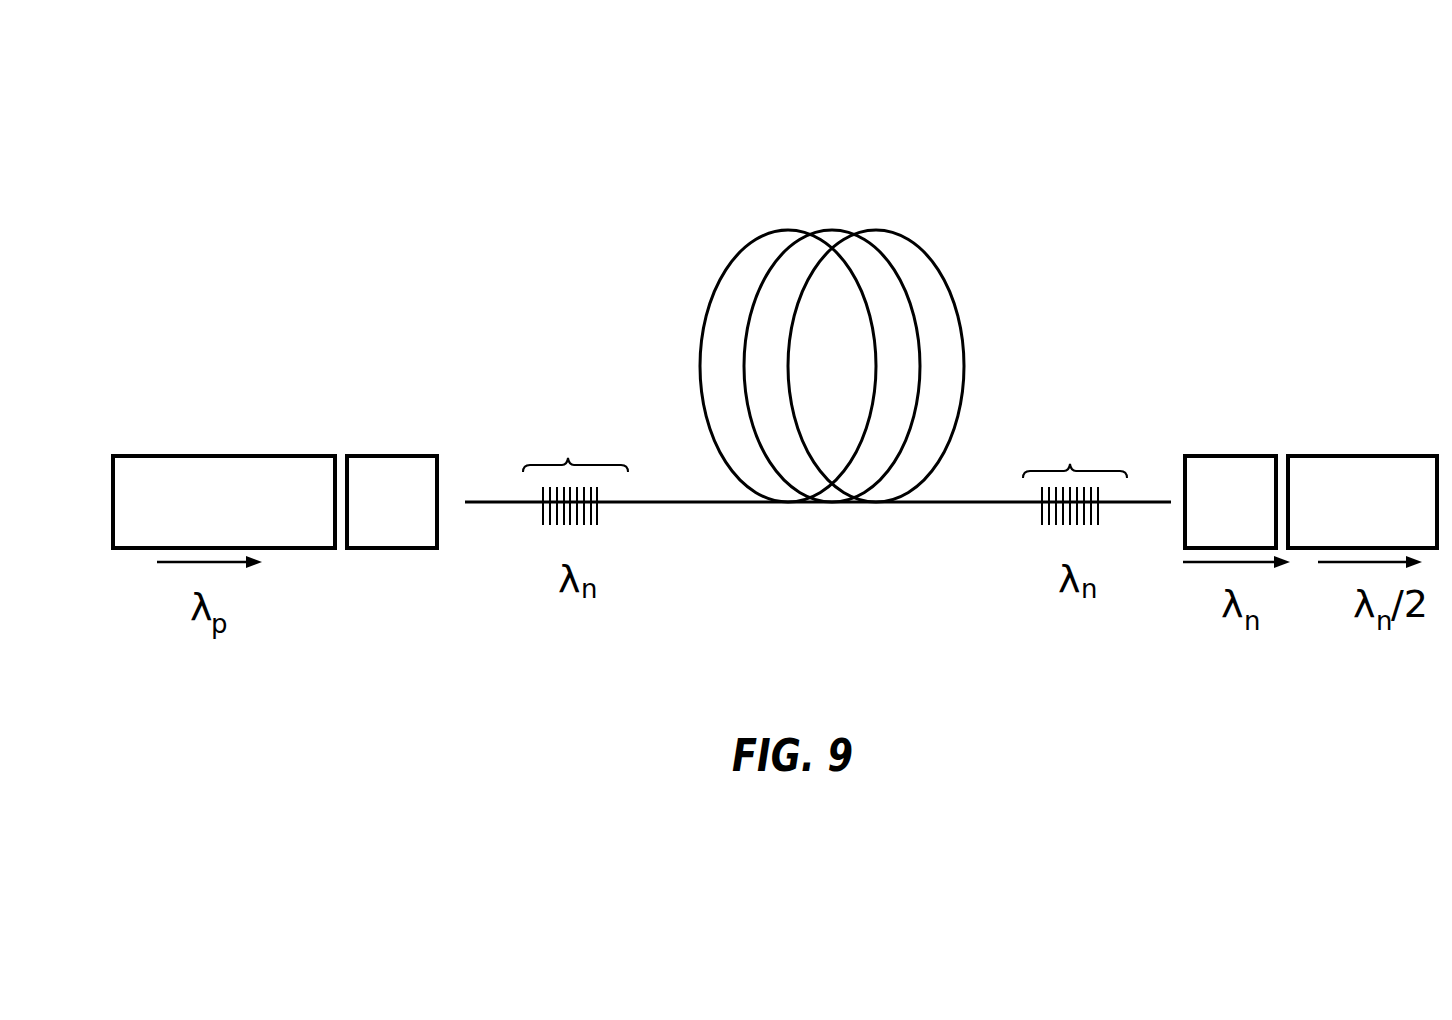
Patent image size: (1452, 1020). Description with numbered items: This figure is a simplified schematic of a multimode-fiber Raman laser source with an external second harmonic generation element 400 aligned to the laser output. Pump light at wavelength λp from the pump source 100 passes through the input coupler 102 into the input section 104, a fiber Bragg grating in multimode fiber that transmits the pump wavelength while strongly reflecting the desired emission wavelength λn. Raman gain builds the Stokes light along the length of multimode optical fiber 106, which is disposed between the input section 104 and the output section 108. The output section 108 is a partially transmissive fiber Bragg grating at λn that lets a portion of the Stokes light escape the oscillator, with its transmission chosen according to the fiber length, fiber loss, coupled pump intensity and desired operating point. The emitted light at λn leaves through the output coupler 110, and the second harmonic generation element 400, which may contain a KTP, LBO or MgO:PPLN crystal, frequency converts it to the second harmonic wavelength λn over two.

The pump source 100 is at (243, 455).
The input coupler 102 is at (390, 455).
The input section 104 is at (567, 462).
The length of multimode optical fiber 106 is at (831, 230).
The output section 108 is at (1067, 468).
The output coupler 110 is at (1230, 455).
The second harmonic generation element 400 is at (1357, 455).